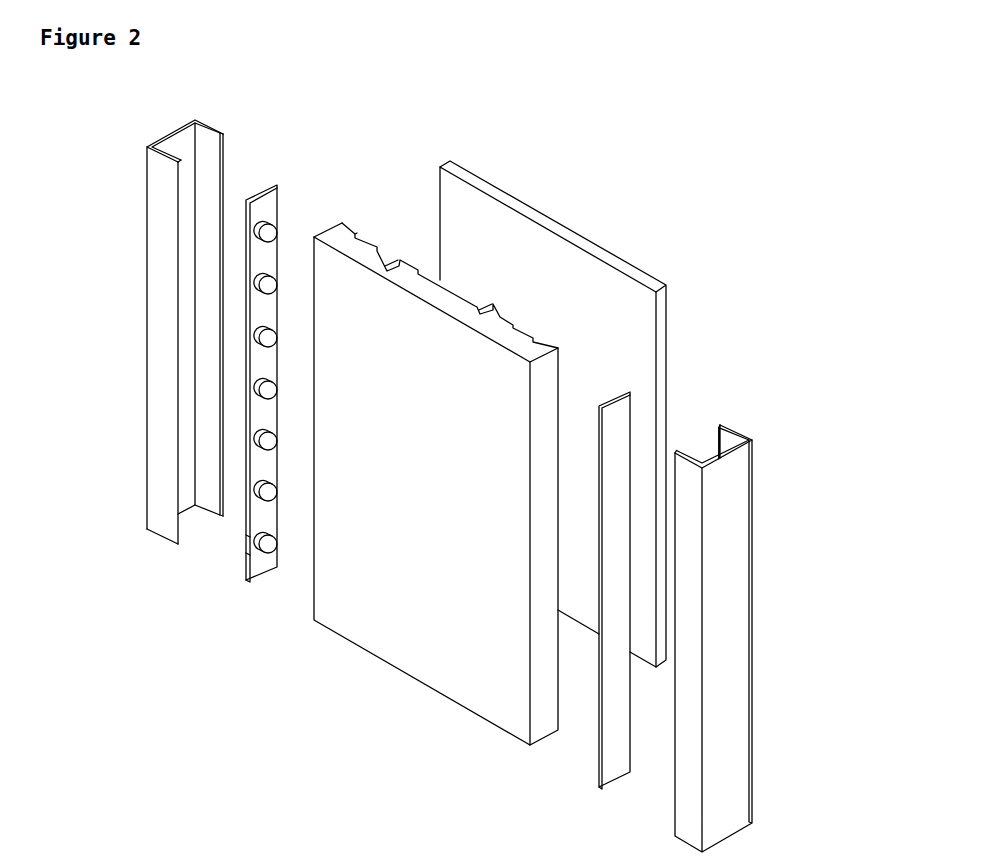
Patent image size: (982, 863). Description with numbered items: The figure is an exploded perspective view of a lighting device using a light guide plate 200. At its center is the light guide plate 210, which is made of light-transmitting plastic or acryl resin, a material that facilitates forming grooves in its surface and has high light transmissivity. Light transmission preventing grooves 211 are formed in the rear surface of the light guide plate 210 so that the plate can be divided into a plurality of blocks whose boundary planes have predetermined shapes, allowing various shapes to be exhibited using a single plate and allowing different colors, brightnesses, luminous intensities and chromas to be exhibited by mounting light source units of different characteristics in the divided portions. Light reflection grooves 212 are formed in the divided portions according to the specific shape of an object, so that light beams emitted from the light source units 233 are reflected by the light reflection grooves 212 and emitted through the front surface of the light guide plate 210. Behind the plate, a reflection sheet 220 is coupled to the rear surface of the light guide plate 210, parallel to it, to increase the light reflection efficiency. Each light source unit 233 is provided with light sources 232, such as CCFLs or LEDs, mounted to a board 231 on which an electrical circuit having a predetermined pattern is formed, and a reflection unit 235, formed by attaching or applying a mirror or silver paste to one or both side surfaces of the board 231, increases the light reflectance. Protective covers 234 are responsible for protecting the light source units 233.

The lighting device using a light guide plate 200 is at (528, 178).
The light guide plate 210 is at (402, 653).
The light transmission preventing grooves 211 is at (398, 262).
The light reflection grooves 212 is at (362, 234).
The reflection sheet 220 is at (563, 230).
The board 231 is at (243, 527).
The light sources 232 is at (266, 553).
The light source units 233 is at (282, 632).
The protective covers 234 is at (158, 315).
The reflection unit 235 is at (260, 207).